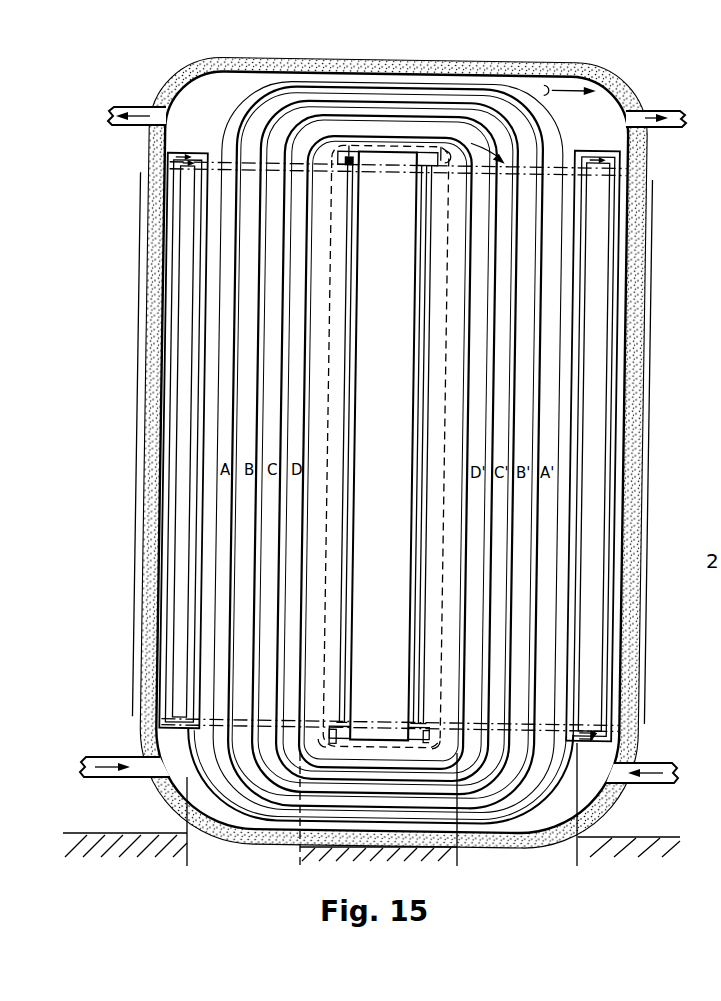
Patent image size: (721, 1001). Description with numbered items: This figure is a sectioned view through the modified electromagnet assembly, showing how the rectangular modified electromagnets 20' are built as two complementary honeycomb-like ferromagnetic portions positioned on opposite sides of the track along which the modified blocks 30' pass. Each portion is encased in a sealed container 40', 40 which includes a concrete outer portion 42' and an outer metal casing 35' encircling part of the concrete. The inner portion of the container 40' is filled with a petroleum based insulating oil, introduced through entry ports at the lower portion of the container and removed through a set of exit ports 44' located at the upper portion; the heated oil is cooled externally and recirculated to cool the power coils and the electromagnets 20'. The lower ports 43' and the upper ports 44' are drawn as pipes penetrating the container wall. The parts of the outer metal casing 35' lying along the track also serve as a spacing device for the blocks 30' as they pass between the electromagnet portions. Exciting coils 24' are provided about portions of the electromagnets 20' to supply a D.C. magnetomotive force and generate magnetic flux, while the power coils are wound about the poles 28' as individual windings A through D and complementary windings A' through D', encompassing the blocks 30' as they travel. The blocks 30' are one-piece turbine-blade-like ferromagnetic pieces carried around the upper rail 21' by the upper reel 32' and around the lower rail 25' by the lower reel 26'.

The sealed container 40 is at (392, 430).
The sealed container 40' is at (424, 452).
The concrete outer portion 42' is at (390, 452).
The exit ports 44' is at (407, 95).
The lower coolant pipes 43' is at (389, 746).
The exciting coils 24' is at (431, 419).
The modified electromagnets 20' is at (378, 538).
The outer metal casing 35' is at (385, 443).
The modified blocks 30' is at (405, 446).
The poles 28' is at (386, 446).
The upper reel 32' is at (392, 93).
The upper rail 21' is at (461, 94).
The lower rail 25' is at (379, 709).
The lower reel 26' is at (379, 728).